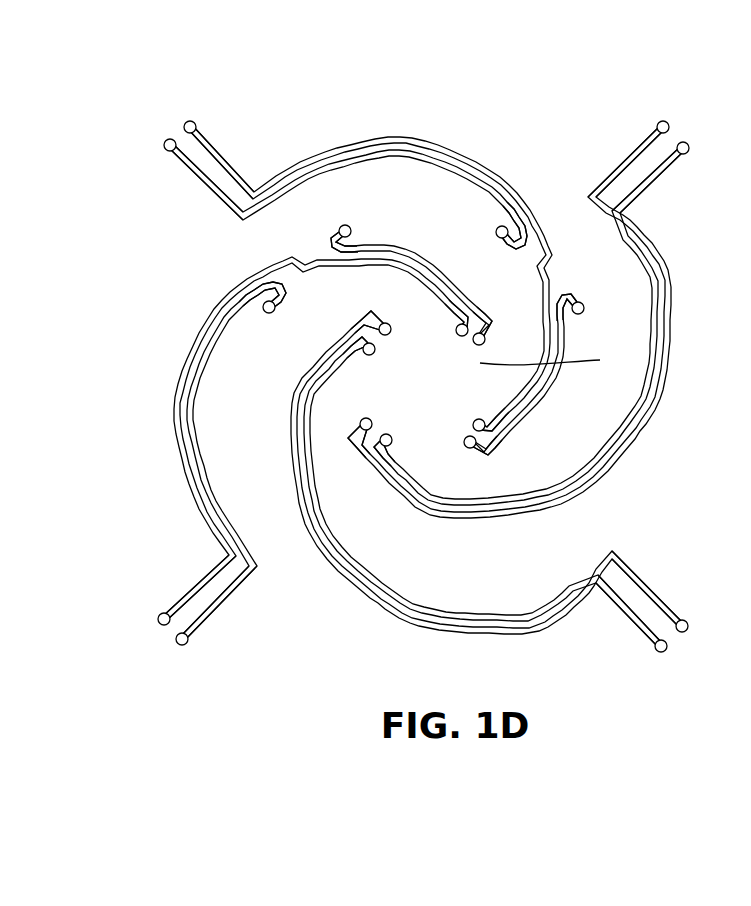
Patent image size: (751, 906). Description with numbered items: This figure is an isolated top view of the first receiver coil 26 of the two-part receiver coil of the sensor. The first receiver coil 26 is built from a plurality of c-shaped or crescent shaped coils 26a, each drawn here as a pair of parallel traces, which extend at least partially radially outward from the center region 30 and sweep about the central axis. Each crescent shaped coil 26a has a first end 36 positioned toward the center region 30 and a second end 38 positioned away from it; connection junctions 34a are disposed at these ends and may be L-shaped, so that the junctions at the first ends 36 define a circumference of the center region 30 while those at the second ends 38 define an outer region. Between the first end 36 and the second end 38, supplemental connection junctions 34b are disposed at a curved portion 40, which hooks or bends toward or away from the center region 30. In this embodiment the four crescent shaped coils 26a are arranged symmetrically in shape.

The first receiver coil 26 is at (433, 365).
The crescent shaped coils 26a is at (383, 141).
The center region 30 is at (600, 360).
The connection junctions 34a is at (186, 121).
The supplemental connection junctions 34b is at (358, 229).
The first end 36 is at (492, 462).
The second end 38 is at (292, 160).
The curved portion 40 is at (334, 232).